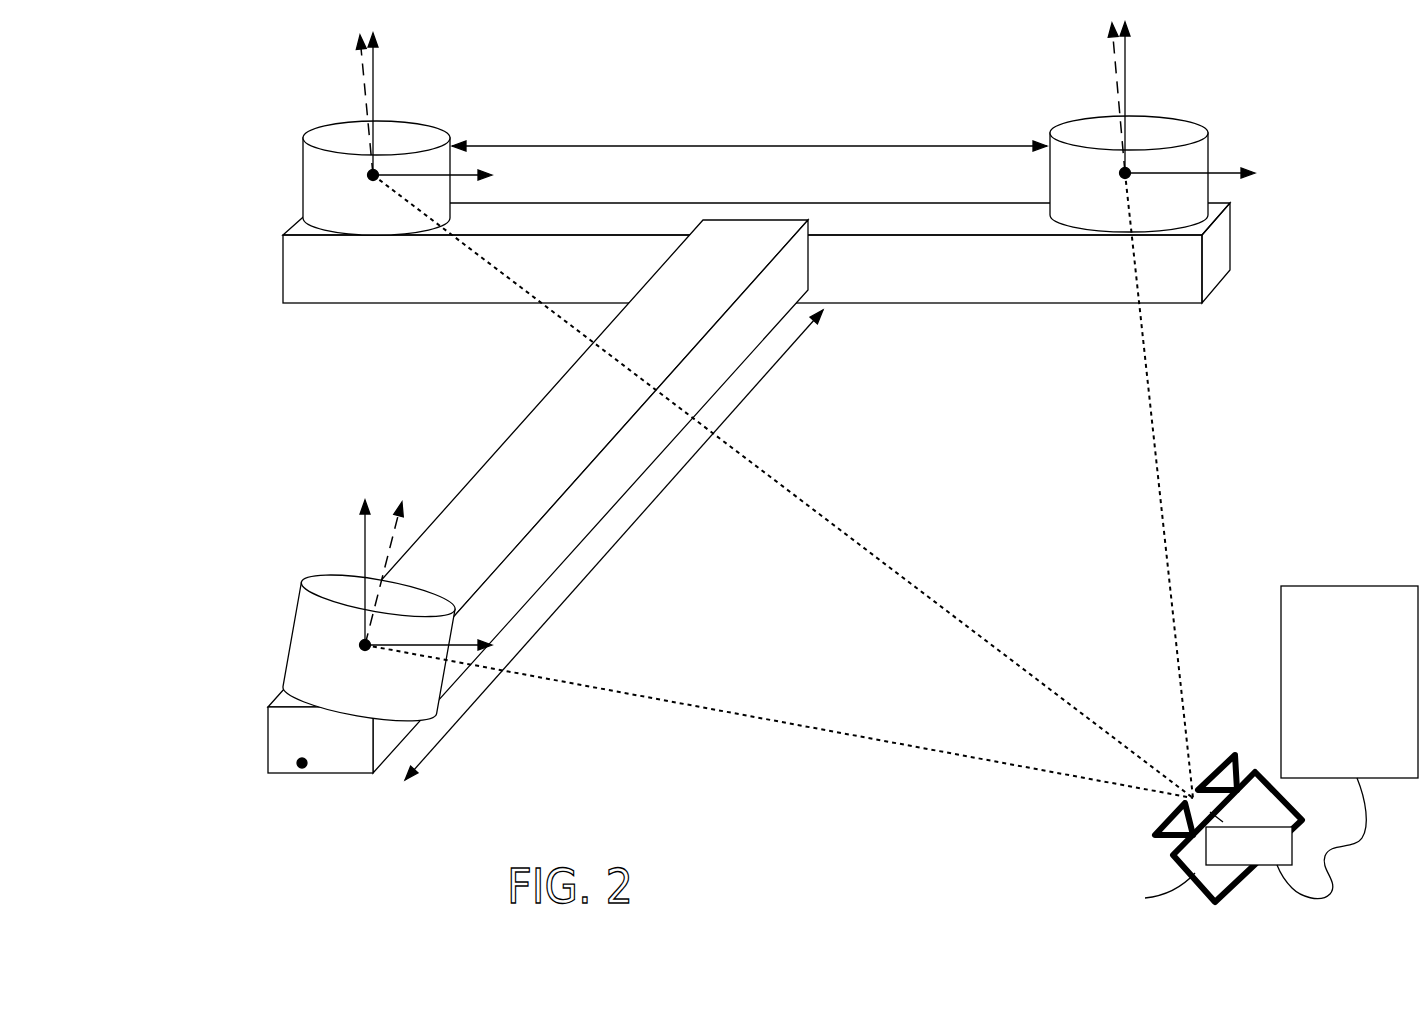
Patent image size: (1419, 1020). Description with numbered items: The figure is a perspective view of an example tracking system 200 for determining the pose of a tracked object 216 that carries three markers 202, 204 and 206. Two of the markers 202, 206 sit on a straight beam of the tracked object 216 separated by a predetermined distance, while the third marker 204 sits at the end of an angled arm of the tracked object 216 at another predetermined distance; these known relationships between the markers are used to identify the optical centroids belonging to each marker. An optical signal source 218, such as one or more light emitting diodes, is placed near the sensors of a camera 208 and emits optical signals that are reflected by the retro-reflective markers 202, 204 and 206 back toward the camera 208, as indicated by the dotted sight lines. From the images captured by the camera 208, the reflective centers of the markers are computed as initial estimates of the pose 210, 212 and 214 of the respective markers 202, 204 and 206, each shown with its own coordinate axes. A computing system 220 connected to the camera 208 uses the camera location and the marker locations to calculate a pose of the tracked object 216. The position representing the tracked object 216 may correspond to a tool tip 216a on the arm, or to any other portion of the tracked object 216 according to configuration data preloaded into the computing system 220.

The tracking system 200 is at (186, 155).
The marker 202 is at (303, 175).
The marker 204 is at (293, 630).
The marker 206 is at (1060, 125).
The camera 208 is at (1167, 858).
The pose 210 is at (417, 112).
The pose 212 is at (404, 568).
The pose 214 is at (1174, 101).
The tracked object 216 is at (893, 285).
The tool tip 216a is at (293, 748).
The optical signal source 218 is at (1231, 860).
The computing system 220 is at (1331, 722).